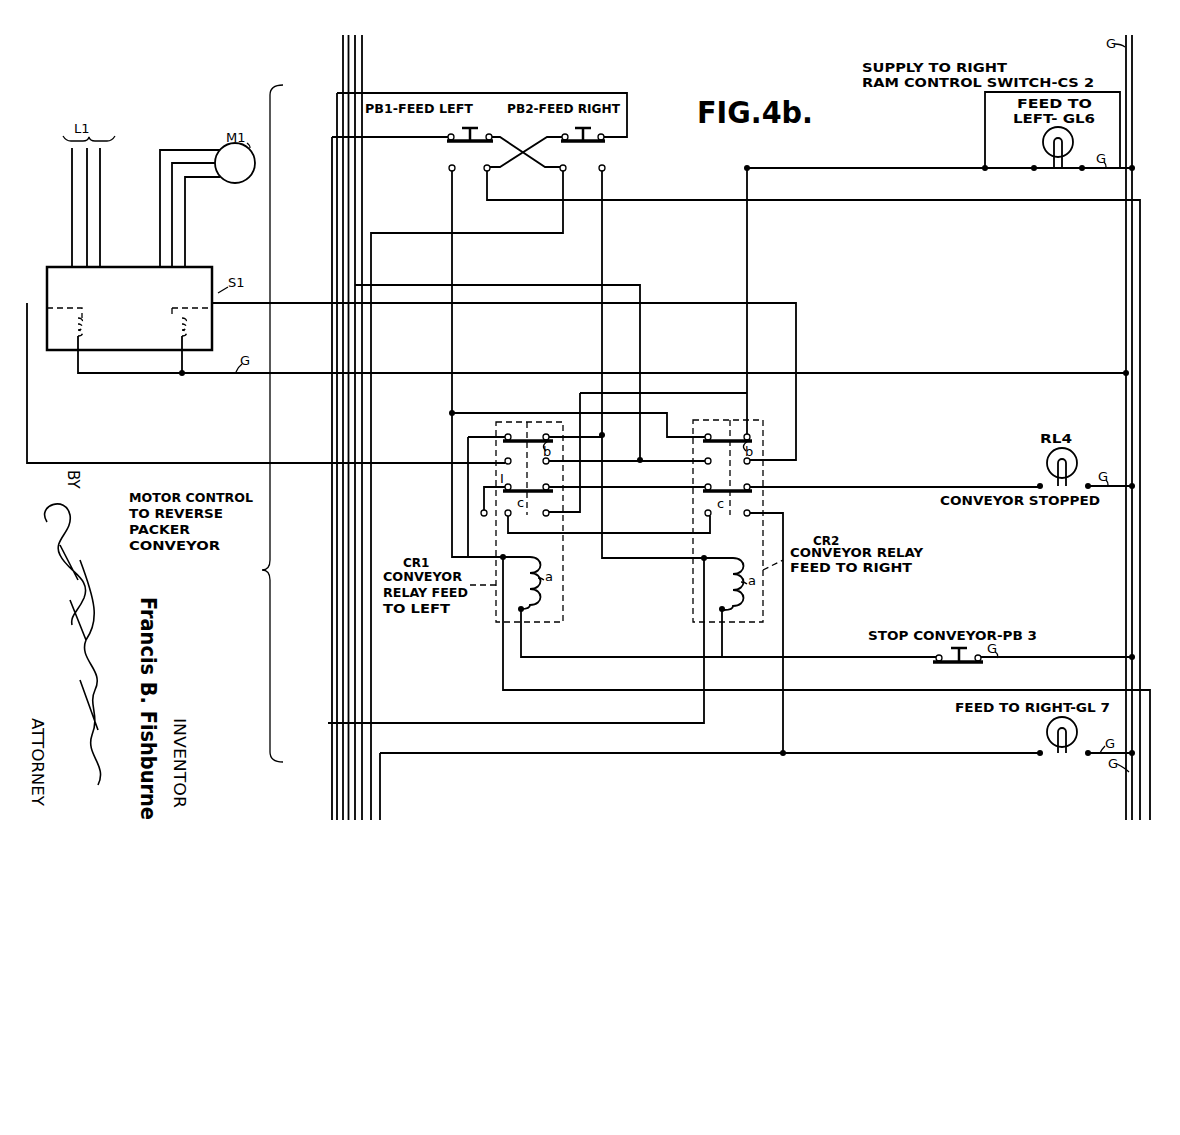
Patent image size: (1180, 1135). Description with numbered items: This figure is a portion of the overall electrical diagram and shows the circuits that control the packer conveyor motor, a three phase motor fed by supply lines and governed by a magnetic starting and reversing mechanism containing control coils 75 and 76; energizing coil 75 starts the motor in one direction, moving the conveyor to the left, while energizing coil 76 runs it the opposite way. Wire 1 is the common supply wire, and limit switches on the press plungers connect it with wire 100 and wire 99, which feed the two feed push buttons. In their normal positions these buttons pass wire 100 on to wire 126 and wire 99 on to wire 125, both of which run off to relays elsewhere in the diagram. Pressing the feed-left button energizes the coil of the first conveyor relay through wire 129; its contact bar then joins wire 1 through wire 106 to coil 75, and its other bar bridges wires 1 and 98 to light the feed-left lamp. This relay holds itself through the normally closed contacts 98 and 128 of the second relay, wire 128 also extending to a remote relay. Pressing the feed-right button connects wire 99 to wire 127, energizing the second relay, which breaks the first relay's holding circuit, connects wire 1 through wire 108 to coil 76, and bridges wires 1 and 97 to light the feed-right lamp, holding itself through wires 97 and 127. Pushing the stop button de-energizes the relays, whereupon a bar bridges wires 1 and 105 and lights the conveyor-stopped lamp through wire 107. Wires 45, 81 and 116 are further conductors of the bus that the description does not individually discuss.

The wire 1 is at (357, 52).
The supply conductor 45 is at (362, 71).
The control coil 75 is at (88, 318).
The control coil 76 is at (176, 326).
The supply conductor 81 is at (348, 71).
The wire 97 is at (486, 440).
The wire 98 is at (747, 168).
The wire 99 is at (332, 137).
The wire 100 is at (337, 93).
The wire 105 is at (568, 485).
The wire 106 is at (205, 463).
The wire 107 is at (768, 486).
The wire 108 is at (523, 304).
The supply conductor 116 is at (342, 51).
The wire 125 is at (399, 233).
The wire 126 is at (1160, 795).
The wire 127 is at (610, 188).
The wire 128 is at (448, 192).
The wire 129 is at (529, 656).